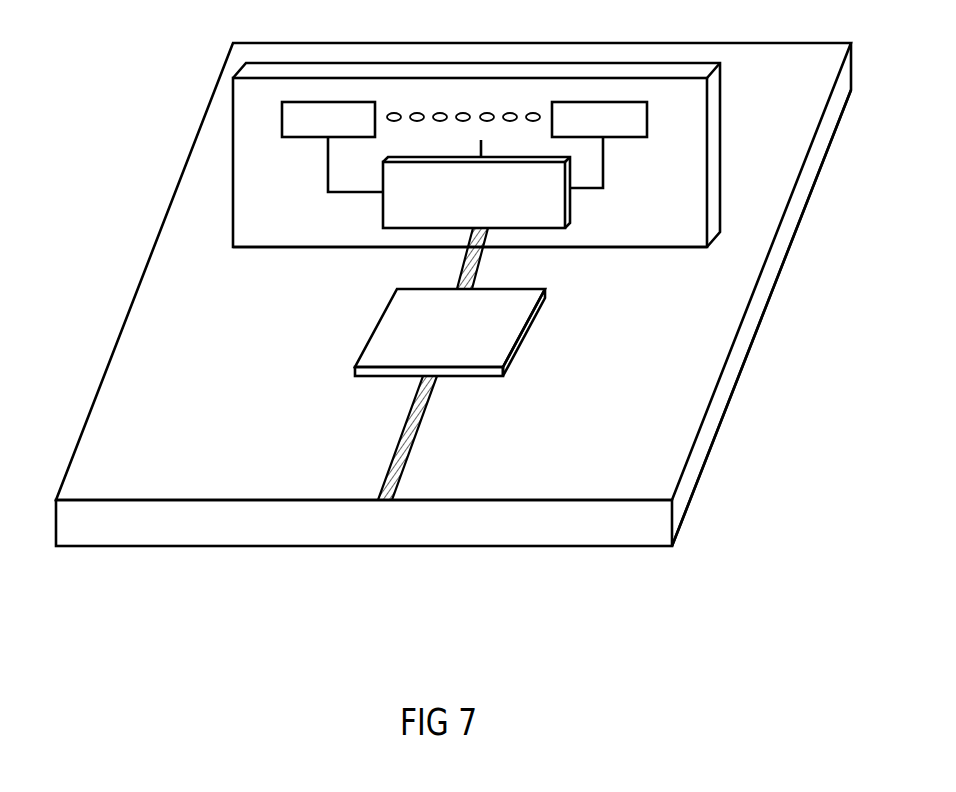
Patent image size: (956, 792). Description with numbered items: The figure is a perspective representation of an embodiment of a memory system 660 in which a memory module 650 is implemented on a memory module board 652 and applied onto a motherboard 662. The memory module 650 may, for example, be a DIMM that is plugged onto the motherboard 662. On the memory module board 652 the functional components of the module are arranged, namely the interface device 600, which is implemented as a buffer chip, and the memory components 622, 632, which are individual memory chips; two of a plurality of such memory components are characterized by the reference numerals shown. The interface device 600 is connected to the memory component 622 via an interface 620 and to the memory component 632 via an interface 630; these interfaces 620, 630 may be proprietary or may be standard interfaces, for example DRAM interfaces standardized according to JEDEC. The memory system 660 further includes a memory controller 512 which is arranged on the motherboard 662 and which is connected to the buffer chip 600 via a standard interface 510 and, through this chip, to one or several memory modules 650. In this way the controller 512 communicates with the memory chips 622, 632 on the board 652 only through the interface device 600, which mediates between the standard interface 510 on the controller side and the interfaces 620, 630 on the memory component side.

The standard interface 510 is at (480, 277).
The memory controller 512 is at (513, 360).
The interface device 600 is at (476, 184).
The interface 620 is at (326, 161).
The memory component 622 is at (328, 120).
The interface 630 is at (604, 165).
The memory component 632 is at (599, 120).
The memory module 650 is at (730, 62).
The memory module board 652 is at (641, 247).
The memory system 660 is at (670, 559).
The motherboard 662 is at (690, 452).